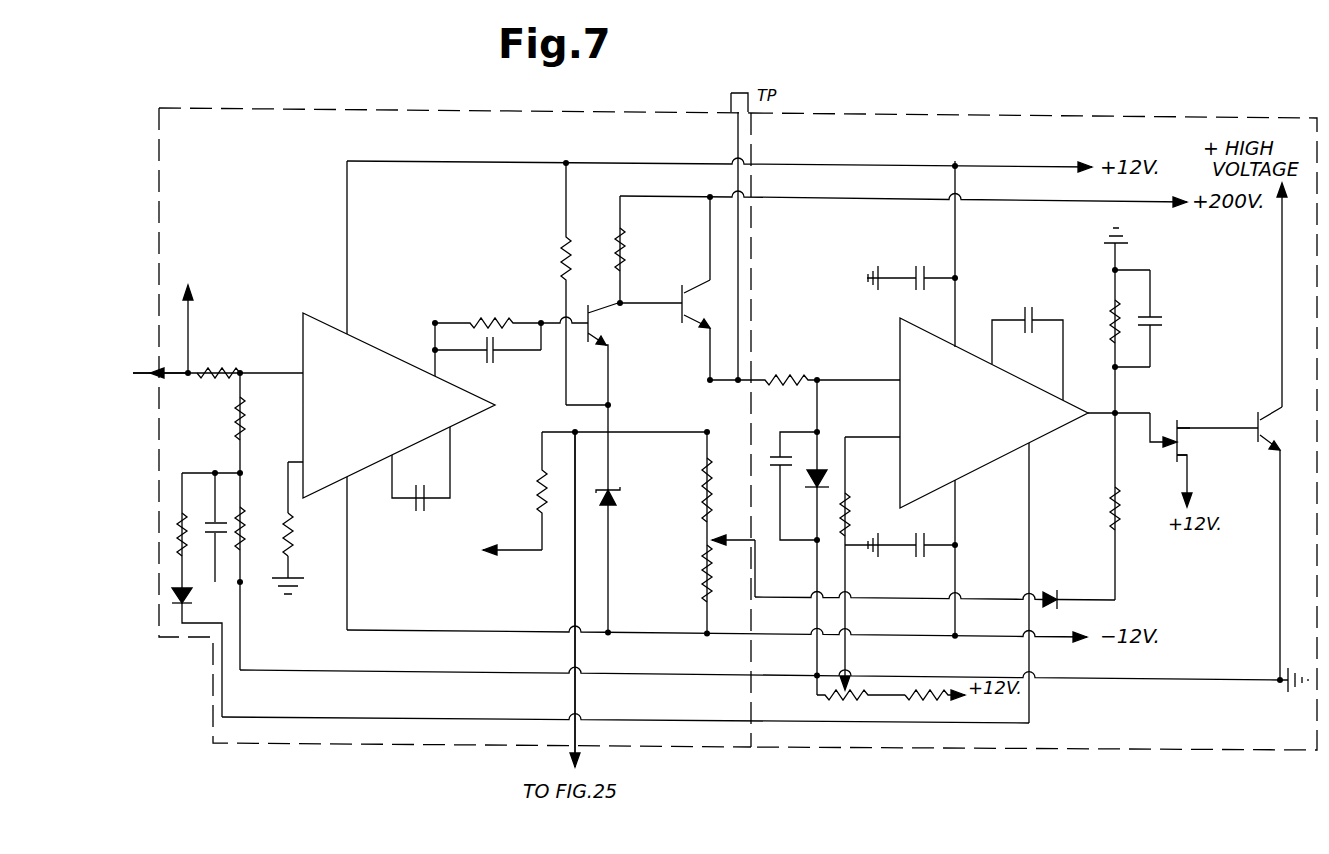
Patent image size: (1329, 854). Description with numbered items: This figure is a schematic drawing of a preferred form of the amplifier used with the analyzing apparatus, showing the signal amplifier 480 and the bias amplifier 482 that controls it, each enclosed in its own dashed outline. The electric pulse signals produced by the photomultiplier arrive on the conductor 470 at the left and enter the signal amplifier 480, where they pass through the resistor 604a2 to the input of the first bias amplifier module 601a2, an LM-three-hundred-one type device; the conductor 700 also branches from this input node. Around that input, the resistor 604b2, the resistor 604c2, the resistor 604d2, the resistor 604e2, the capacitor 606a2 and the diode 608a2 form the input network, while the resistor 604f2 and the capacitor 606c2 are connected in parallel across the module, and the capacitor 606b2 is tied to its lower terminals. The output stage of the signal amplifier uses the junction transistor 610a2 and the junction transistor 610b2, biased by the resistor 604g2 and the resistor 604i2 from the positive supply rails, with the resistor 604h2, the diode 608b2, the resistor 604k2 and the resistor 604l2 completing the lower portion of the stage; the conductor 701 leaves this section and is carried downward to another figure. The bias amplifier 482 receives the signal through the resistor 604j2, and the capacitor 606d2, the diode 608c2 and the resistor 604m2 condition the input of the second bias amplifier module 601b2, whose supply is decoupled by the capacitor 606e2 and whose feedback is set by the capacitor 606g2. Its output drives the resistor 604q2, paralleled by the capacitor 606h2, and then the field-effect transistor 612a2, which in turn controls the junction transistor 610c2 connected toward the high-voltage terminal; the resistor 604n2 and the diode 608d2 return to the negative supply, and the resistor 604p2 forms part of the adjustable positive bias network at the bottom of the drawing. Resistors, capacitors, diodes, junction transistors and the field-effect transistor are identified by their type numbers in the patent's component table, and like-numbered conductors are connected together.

The signal amplifier 480 is at (380, 100).
The bias amplifier 482 is at (1098, 108).
The conductor 700 is at (192, 302).
The conductor 701 is at (570, 693).
The conductor 470 is at (186, 377).
The resistor 604a2 is at (205, 370).
The resistor 604b2 is at (182, 510).
The resistor 604c2 is at (244, 420).
The resistor 604d2 is at (245, 560).
The resistor 604e2 is at (295, 560).
The resistor 604f2 is at (518, 298).
The resistor 604g2 is at (566, 243).
The resistor 604h2 is at (542, 480).
The resistor 604i2 is at (623, 245).
The resistor 604j2 is at (840, 344).
The resistor 604k2 is at (707, 510).
The resistor 604l2 is at (707, 590).
The resistor 604m2 is at (849, 497).
The resistor 604n2 is at (1120, 522).
The resistor 604p2 is at (938, 697).
The resistor 604q2 is at (1112, 305).
The capacitor 606a2 is at (213, 560).
The capacitor 606b2 is at (428, 506).
The capacitor 606c2 is at (488, 364).
The capacitor 606d2 is at (772, 455).
The capacitor 606e2 is at (930, 255).
The capacitor 606g2 is at (1036, 328).
The capacitor 606h2 is at (1163, 322).
The diode 608a2 is at (180, 585).
The diode 608b2 is at (612, 488).
The diode 608c2 is at (820, 474).
The diode 608d2 is at (1095, 553).
The bias amplifier 601a2 is at (356, 337).
The bias amplifier 601b2 is at (1085, 418).
The junction transistor 610a2 is at (612, 340).
The junction transistor 610b2 is at (690, 332).
The junction transistor 610c2 is at (1258, 450).
The field-effect transistor 612a2 is at (1170, 432).